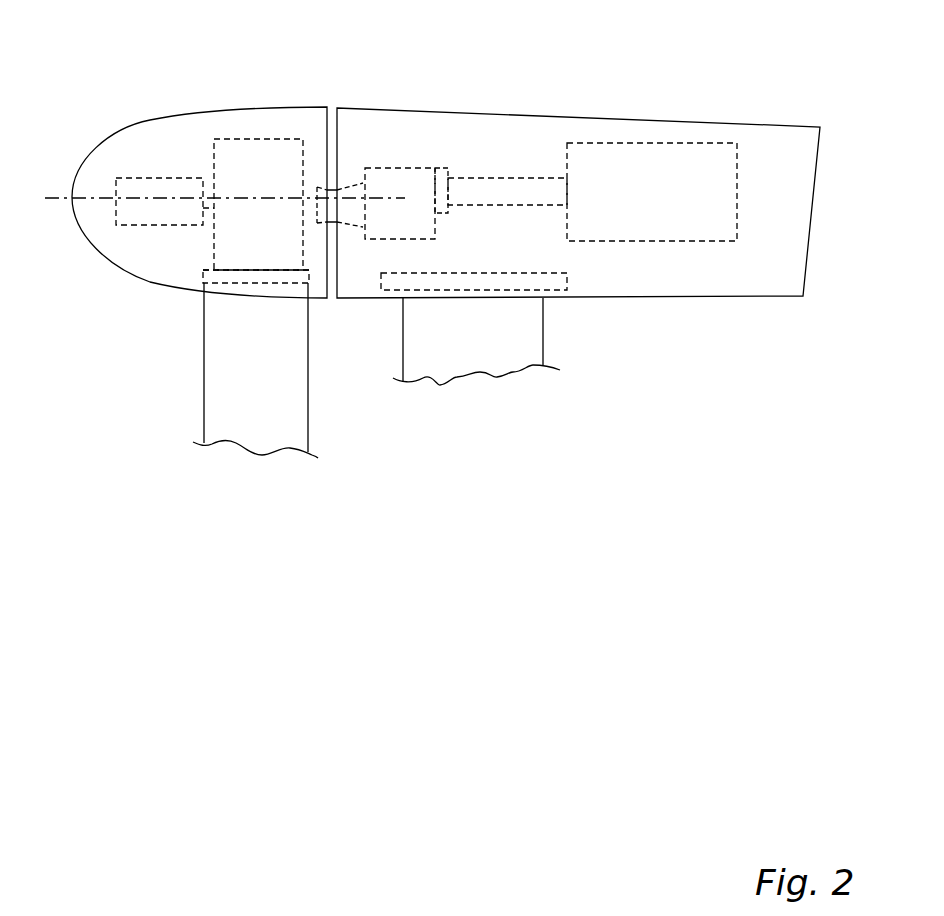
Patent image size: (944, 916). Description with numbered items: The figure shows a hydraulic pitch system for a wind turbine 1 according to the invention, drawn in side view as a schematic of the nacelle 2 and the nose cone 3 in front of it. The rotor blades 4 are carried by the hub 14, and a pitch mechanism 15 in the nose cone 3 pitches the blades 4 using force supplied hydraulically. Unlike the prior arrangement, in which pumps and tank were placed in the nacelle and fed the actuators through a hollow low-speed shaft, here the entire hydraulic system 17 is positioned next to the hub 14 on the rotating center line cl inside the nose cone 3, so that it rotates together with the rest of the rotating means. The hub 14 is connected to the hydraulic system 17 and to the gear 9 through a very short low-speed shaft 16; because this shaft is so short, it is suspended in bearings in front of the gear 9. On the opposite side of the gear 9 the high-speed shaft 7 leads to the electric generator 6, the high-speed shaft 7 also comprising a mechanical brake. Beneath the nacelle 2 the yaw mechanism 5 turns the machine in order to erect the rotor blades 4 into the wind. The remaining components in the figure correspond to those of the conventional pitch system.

The wind turbine 1 is at (721, 306).
The nacelle 2 is at (795, 124).
The nose cone 3 is at (78, 150).
The blades 4 is at (218, 440).
The yaw mechanism 5 is at (455, 375).
The electric generator 6 is at (678, 153).
The high-speed shaft 7 is at (452, 176).
The gear 9 is at (387, 175).
The hub 14 is at (240, 152).
The pitch mechanism 15 is at (205, 272).
The low-speed shaft 16 is at (317, 187).
The hydraulic system 17 is at (133, 178).
The rotating center line cl is at (55, 200).